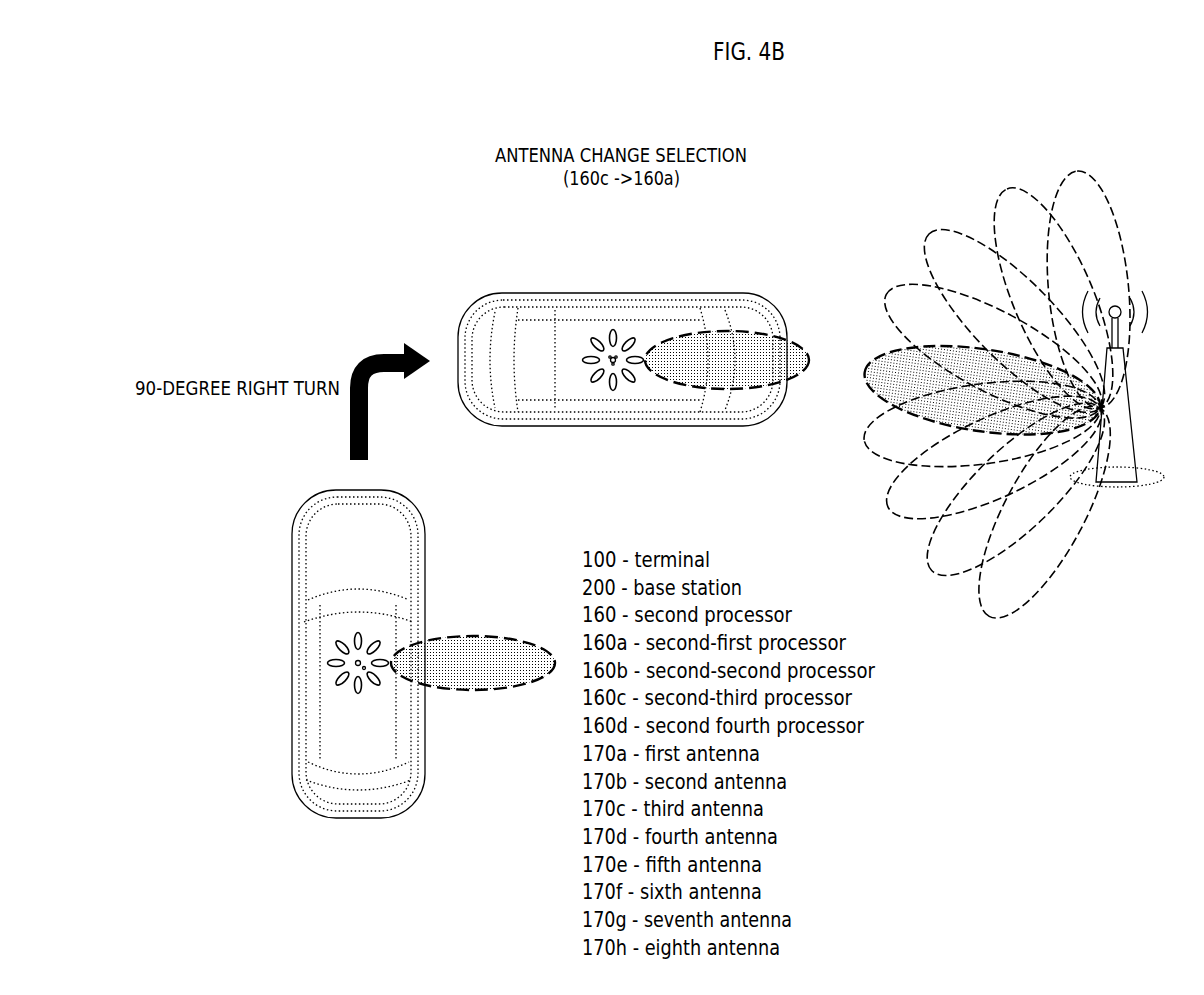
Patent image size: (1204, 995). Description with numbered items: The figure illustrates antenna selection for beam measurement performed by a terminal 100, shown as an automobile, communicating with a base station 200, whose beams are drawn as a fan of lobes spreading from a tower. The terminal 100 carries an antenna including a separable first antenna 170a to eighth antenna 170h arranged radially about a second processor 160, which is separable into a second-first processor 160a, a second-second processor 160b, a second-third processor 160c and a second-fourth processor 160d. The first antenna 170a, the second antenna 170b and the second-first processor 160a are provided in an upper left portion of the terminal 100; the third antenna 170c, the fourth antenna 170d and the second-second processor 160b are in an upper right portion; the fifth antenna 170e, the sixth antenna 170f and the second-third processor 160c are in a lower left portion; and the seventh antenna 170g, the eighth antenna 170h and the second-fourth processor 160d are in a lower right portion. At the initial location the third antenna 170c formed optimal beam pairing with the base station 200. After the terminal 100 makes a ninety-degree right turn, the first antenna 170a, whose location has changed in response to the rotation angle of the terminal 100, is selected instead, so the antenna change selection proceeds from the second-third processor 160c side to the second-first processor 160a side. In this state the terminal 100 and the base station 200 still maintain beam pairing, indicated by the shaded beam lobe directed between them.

The terminal 100 is at (787, 310).
The base station 200 is at (1120, 407).
The second processor 160 is at (606, 352).
The second-first processor 160a is at (616, 357).
The second-second processor 160b is at (610, 357).
The second-third processor 160c is at (613, 364).
The second-fourth processor 160d is at (368, 670).
The first antenna 170a is at (632, 338).
The second antenna 170b is at (640, 366).
The third antenna 170c is at (632, 382).
The fourth antenna 170d is at (613, 390).
The fifth antenna 170e is at (596, 382).
The sixth antenna 170f is at (586, 356).
The seventh antenna 170g is at (598, 338).
The eighth antenna 170h is at (614, 330).